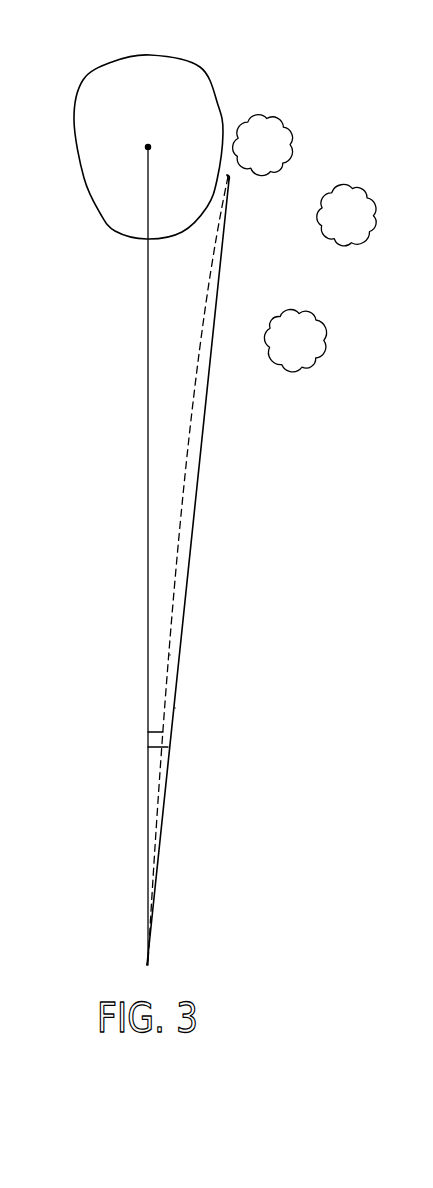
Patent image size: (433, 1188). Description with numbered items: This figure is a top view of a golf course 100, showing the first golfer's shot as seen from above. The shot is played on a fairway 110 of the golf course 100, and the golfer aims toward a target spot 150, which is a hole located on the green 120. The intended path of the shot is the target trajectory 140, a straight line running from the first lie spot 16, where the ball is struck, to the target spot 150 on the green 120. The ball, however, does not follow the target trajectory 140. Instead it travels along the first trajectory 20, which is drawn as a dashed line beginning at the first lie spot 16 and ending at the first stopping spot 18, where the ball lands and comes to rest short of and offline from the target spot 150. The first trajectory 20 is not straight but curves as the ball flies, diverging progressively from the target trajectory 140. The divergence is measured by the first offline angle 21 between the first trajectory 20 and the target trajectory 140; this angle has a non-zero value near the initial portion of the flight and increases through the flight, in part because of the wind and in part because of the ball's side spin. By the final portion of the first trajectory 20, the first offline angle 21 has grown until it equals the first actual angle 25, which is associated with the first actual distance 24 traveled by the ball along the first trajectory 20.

The golf course 100 is at (323, 128).
The fairway 110 is at (222, 550).
The green 120 is at (185, 77).
The target trajectory 140 is at (148, 595).
The target spot 150 is at (148, 147).
The first lie spot 16 is at (147, 965).
The first stopping spot 18 is at (228, 177).
The first trajectory 20 is at (170, 655).
The first offline angle 21 is at (160, 728).
The first actual distance 24 is at (175, 708).
The first actual angle 25 is at (152, 750).